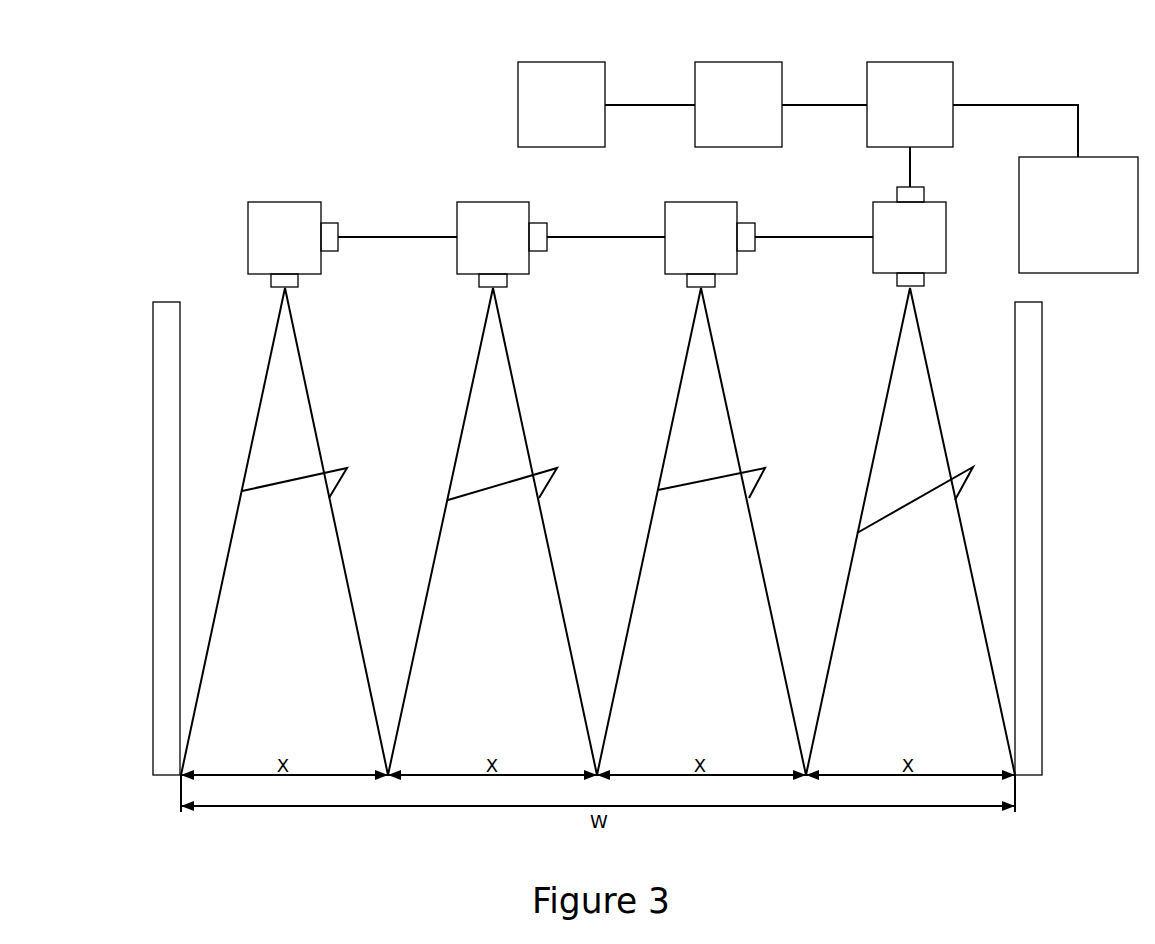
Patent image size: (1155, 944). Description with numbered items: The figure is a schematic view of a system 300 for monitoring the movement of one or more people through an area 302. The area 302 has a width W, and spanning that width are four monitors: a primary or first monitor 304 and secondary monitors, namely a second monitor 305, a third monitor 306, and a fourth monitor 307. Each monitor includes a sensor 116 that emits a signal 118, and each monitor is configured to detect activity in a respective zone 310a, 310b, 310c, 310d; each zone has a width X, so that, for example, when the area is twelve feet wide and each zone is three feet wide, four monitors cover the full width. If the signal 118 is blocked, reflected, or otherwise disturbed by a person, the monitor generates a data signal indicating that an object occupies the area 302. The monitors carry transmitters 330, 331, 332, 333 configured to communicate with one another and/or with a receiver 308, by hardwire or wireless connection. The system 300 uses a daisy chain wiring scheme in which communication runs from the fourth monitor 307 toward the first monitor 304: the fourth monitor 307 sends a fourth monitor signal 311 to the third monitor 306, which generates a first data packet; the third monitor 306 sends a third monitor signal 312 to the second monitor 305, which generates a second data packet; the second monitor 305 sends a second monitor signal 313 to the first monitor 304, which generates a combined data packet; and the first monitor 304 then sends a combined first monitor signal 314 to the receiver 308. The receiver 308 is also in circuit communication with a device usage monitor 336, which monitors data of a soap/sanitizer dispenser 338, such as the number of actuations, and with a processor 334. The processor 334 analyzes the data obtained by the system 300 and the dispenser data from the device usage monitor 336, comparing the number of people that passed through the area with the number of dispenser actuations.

The system 300 is at (372, 80).
The area 302 is at (143, 460).
The first monitor 304 is at (871, 216).
The second monitor 305 is at (688, 245).
The third monitor 306 is at (494, 211).
The fourth monitor 307 is at (273, 227).
The receiver 308 is at (918, 61).
The zone 310a is at (284, 531).
The zone 310b is at (492, 531).
The zone 310c is at (701, 531).
The zone 310d is at (910, 531).
The fourth monitor signal 311 is at (378, 238).
The third monitor signal 312 is at (595, 238).
The second monitor signal 313 is at (825, 240).
The first monitor signal 314 is at (910, 168).
The sensor 116 is at (268, 280).
The signal 118 is at (621, 485).
The transmitter 330 is at (336, 223).
The transmitter 331 is at (545, 223).
The transmitter 332 is at (748, 252).
The transmitter 333 is at (895, 192).
The processor 334 is at (1092, 273).
The device usage monitor 336 is at (746, 61).
The soap/sanitizer dispenser 338 is at (569, 61).